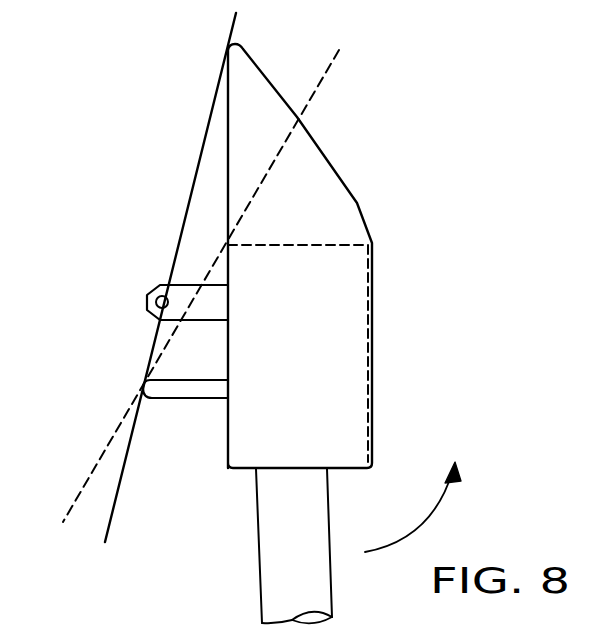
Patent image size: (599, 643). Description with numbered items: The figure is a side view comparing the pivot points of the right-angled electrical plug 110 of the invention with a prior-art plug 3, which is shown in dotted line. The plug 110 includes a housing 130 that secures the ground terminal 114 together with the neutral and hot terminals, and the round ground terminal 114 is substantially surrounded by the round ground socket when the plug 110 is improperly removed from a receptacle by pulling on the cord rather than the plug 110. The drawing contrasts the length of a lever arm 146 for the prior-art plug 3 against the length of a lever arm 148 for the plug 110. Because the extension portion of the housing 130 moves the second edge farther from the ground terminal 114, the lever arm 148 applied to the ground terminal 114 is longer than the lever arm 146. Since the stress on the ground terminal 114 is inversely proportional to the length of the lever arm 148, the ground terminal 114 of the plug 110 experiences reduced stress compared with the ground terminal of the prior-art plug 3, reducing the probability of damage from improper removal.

The plug 110 is at (406, 61).
The housing 130 is at (332, 184).
The plug 3 is at (352, 318).
The ground terminal 114 is at (167, 391).
The lever arm 148 is at (200, 157).
The lever arm 146 is at (213, 270).